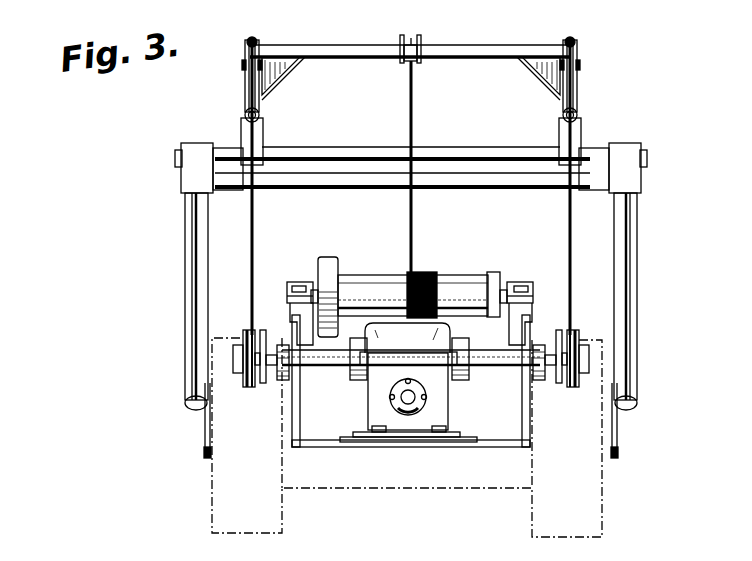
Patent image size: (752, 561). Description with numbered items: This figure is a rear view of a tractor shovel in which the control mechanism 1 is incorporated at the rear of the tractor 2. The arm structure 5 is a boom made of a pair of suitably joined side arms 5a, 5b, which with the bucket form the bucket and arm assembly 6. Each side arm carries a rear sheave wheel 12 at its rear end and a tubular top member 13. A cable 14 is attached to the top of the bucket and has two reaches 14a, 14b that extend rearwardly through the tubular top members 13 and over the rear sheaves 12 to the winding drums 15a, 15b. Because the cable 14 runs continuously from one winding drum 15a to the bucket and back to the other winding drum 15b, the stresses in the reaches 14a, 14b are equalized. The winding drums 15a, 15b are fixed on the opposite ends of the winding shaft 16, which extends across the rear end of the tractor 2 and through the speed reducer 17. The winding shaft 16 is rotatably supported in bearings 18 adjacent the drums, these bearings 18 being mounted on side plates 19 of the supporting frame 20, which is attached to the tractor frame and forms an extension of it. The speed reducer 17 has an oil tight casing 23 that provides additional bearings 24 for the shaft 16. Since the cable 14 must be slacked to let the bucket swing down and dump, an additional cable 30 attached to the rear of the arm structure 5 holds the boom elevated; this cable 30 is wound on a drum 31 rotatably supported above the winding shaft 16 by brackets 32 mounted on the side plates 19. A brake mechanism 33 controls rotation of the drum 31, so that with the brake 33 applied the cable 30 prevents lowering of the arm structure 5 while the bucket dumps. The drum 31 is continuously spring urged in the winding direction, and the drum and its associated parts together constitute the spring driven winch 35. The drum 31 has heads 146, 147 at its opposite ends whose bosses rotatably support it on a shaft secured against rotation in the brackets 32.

The control mechanism 1 is at (410, 440).
The tractor 2 is at (432, 479).
The arm structure 5 is at (372, 50).
The side arm 5a is at (578, 91).
The side arm 5b is at (244, 93).
The bucket and arm assembly 6 is at (482, 50).
The rear sheave wheel 12 is at (243, 64).
The tubular top member 13 is at (262, 33).
The cable 14 is at (256, 135).
The cable reach 14a is at (575, 45).
The cable reach 14b is at (250, 40).
The winding drum 15a is at (572, 338).
The winding drum 15b is at (248, 338).
The winding shaft 16 is at (322, 366).
The speed reducer 17 is at (452, 409).
The bearing 18 is at (282, 383).
The side plate 19 is at (292, 422).
The supporting frame 20 is at (335, 447).
The casing 23 is at (368, 410).
The bearing 24 is at (356, 380).
The cable 30 is at (412, 212).
The drum 31 is at (468, 278).
The bracket 32 is at (290, 306).
The brake mechanism 33 is at (328, 258).
The spring driven winch 35 is at (440, 274).
The drum head 146 is at (312, 286).
The drum head 147 is at (512, 284).